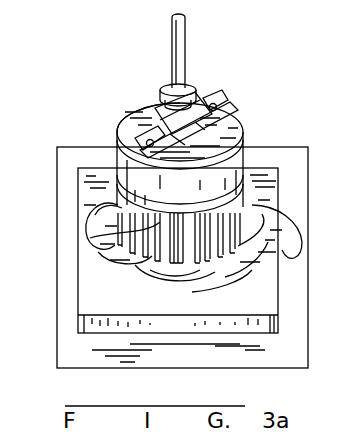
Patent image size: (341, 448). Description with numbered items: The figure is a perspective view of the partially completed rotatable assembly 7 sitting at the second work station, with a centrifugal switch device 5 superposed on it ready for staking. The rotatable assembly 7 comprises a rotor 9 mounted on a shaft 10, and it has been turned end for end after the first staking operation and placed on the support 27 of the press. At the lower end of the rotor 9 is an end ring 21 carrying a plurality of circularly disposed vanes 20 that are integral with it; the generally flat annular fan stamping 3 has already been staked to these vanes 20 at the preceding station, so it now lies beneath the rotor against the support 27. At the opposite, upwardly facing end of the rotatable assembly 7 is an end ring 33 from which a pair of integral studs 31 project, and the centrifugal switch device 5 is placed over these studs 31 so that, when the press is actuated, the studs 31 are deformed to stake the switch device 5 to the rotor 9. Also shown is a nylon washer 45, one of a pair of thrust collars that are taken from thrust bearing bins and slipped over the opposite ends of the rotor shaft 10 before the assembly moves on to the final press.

The fan stamping 3 is at (265, 210).
The centrifugal switch device 5 is at (233, 117).
The rotatable assembly 7 is at (122, 103).
The rotor 9 is at (243, 161).
The shaft 10 is at (185, 33).
The vanes 20 is at (150, 245).
The end ring 21 is at (125, 208).
The support 27 is at (100, 300).
The studs 31 is at (146, 141).
The end ring 33 is at (160, 163).
The nylon washers 45 is at (190, 96).